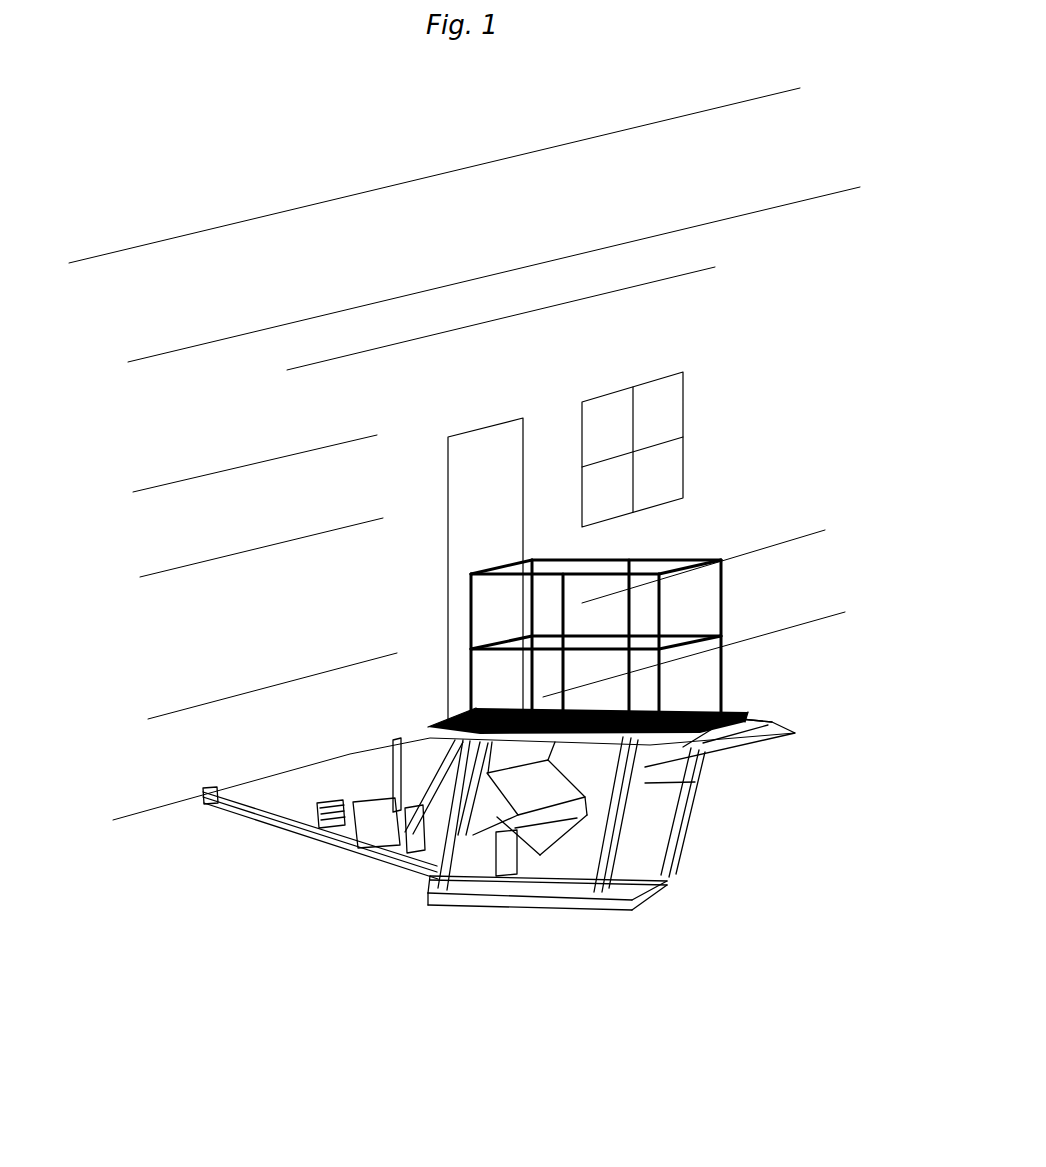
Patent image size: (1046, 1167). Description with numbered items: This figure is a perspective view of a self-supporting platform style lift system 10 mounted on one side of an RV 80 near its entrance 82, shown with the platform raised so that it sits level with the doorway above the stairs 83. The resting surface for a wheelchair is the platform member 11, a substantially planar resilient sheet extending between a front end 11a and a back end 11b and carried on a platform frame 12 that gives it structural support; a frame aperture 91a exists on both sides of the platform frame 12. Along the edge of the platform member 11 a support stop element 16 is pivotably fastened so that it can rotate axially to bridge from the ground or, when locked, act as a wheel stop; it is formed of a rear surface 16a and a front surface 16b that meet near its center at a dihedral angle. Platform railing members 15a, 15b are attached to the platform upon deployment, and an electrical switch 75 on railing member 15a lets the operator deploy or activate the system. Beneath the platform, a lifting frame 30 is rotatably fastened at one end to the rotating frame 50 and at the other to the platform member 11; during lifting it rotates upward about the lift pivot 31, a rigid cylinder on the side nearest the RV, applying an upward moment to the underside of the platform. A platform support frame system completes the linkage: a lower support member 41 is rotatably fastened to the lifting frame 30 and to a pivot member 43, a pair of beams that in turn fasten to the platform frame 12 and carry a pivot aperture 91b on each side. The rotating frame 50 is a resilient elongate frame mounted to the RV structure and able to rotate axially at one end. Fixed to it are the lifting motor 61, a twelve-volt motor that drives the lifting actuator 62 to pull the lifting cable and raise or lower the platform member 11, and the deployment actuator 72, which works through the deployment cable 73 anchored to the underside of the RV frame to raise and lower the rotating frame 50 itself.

The self-supporting platform style lift system 10 is at (312, 1030).
The platform member 11 is at (672, 717).
The front end 11a is at (480, 723).
The back end 11b is at (748, 735).
The platform frame 12 is at (657, 735).
The platform railing member 15a is at (475, 690).
The platform railing member 15b is at (720, 607).
The support stop element 16 is at (802, 727).
The rear surface 16a is at (683, 737).
The front surface 16b is at (737, 716).
The lifting frame 30 is at (448, 852).
The lift pivot 31 is at (472, 875).
The lower support member 41 is at (507, 895).
The pivot member 43 is at (667, 853).
The rotating frame 50 is at (265, 827).
The lifting motor 61 is at (363, 820).
The lifting actuator 62 is at (320, 830).
The deployment actuator 72 is at (262, 790).
The deployment cable 73 is at (394, 782).
The electrical switch 75 is at (555, 665).
The RV 80 is at (221, 276).
The entrance 82 is at (488, 448).
The stairs 83 is at (540, 840).
The frame aperture 91a is at (590, 733).
The pivot aperture 91b is at (613, 787).